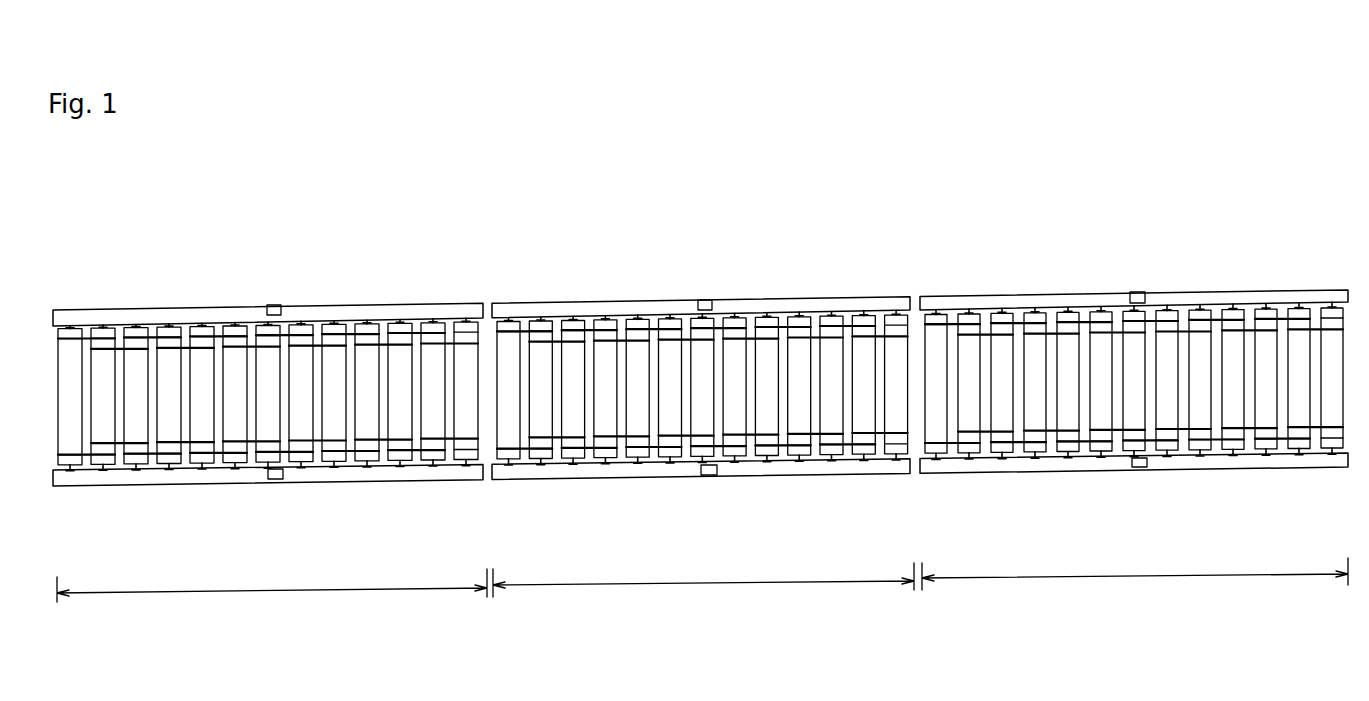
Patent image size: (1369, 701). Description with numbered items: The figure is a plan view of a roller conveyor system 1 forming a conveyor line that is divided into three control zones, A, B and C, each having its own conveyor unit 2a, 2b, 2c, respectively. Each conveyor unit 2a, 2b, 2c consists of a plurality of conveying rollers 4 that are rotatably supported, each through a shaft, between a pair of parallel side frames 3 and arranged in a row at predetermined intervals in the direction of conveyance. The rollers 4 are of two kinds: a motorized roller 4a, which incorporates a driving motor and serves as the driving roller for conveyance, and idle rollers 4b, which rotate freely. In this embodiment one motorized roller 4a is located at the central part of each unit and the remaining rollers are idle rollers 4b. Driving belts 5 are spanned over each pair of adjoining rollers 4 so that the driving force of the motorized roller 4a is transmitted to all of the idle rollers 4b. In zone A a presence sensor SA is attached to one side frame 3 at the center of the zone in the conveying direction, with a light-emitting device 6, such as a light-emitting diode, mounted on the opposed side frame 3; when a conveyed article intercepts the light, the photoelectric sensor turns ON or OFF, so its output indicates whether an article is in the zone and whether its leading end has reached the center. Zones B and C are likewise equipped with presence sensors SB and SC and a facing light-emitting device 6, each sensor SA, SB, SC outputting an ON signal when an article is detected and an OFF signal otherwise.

The roller conveyor system 1 is at (1148, 122).
The conveyor unit 2a is at (385, 287).
The conveyor unit 2b is at (815, 286).
The conveyor unit 2c is at (1249, 271).
The side frame 3 is at (125, 308).
The conveying roller 4 is at (247, 245).
The motorized roller 4a is at (270, 362).
The idle roller 4b is at (204, 362).
The driving belt 5 is at (207, 458).
The light-emitting device 6 is at (278, 481).
The presence sensor SA is at (278, 308).
The presence sensor SB is at (712, 300).
The presence sensor SC is at (1138, 292).